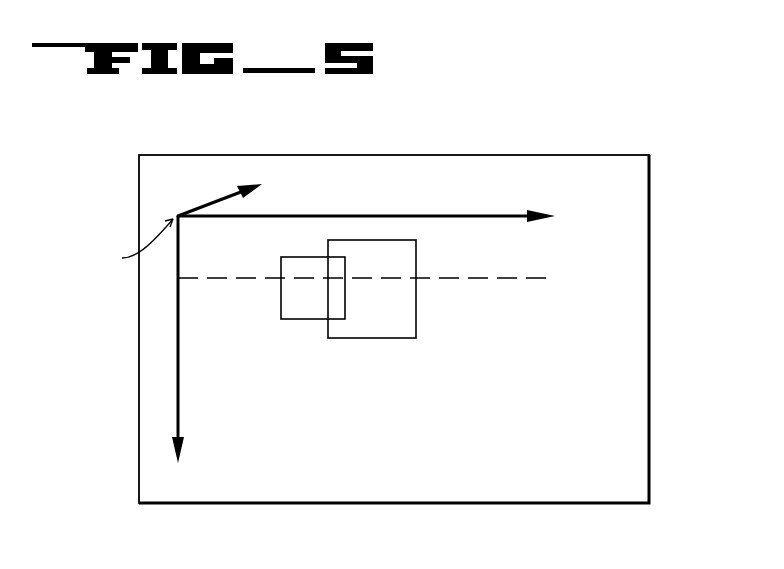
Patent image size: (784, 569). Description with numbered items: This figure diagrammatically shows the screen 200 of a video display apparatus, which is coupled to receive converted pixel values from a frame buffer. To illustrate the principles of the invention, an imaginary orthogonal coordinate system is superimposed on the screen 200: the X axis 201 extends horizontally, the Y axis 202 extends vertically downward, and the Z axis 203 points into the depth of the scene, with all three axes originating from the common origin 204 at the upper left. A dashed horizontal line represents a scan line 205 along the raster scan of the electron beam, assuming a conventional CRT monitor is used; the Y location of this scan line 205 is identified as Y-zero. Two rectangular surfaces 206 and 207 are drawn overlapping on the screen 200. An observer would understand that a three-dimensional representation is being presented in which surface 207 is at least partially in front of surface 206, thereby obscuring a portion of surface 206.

The screen 200 is at (654, 214).
The X axis 201 is at (458, 212).
The Y axis 202 is at (176, 411).
The Z axis 203 is at (216, 200).
The origin 204 is at (176, 211).
The scan line 205 is at (538, 283).
The surface 206 is at (402, 340).
The surface 207 is at (307, 321).